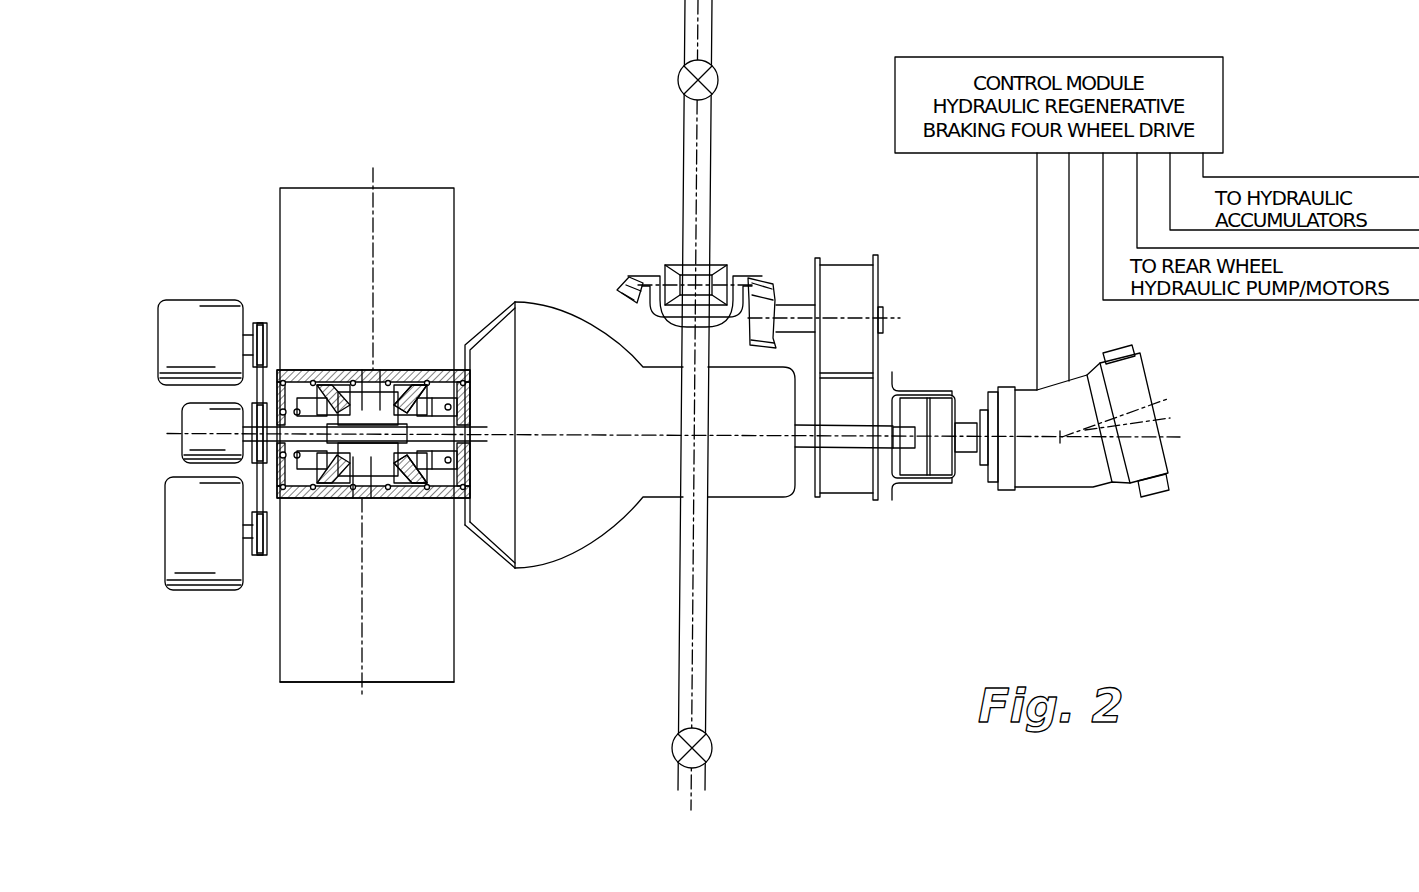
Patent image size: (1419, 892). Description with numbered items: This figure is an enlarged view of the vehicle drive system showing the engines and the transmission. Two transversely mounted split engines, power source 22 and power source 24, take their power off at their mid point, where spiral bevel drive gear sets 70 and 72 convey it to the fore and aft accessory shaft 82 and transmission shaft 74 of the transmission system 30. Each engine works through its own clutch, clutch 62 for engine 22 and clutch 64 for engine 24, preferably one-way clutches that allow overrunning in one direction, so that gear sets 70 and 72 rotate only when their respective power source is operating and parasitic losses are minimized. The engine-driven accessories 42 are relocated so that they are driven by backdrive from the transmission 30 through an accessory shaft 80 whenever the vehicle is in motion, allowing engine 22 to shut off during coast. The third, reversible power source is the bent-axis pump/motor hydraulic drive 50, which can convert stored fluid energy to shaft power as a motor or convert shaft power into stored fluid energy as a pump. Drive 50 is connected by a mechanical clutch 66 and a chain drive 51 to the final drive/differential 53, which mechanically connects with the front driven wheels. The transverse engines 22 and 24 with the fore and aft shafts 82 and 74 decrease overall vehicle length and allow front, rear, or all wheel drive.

The power source 22 is at (340, 197).
The power source 24 is at (402, 675).
The transmission system 30 is at (568, 547).
The accessories 42 is at (168, 327).
The pump/motor hydraulic drive 50 is at (1082, 475).
The chain drive 51 is at (860, 286).
The final drive/differential 53 is at (735, 268).
The clutch 62 is at (382, 372).
The clutch 64 is at (395, 495).
The mechanical clutch 66 is at (943, 466).
The drive gear set 70 is at (407, 370).
The drive gear set 72 is at (340, 497).
The transmission shaft 74 is at (293, 428).
The accessory shaft 80 is at (283, 487).
The accessory shaft 82 is at (477, 423).